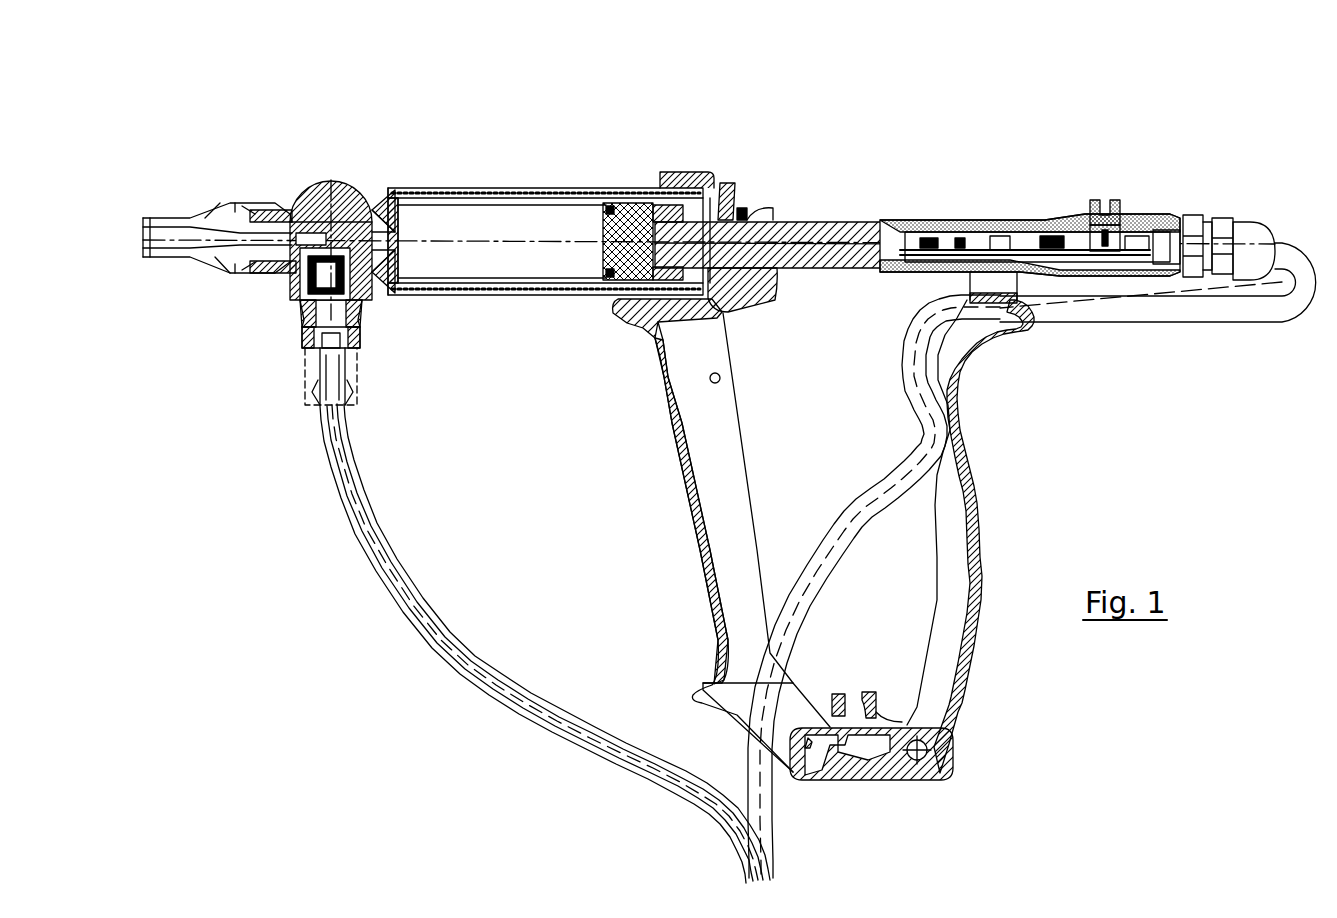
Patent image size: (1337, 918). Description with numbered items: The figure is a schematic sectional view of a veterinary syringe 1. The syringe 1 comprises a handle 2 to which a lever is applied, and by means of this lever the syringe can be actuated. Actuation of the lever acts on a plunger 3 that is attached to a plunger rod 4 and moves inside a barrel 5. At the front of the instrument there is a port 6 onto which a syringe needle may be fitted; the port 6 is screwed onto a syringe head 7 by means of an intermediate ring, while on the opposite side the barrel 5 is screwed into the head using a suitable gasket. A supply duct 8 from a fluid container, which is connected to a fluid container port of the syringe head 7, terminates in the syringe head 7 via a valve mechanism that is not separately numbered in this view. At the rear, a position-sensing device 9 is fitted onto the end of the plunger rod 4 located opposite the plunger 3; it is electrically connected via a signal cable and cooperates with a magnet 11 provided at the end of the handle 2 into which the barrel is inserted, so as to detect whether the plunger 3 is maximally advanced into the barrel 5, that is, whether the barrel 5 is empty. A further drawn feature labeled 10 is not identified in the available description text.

The veterinary syringe 1 is at (490, 52).
The handle 2 is at (681, 434).
The plunger 3 is at (631, 190).
The plunger rod 4 is at (821, 222).
The barrel 5 is at (457, 186).
The port 6 is at (153, 218).
The syringe head 7 is at (325, 185).
The supply duct 8 is at (468, 678).
The position-sensing device 9 is at (1010, 225).
The pressure hose loop 10 is at (1185, 330).
The magnet 11 is at (744, 210).